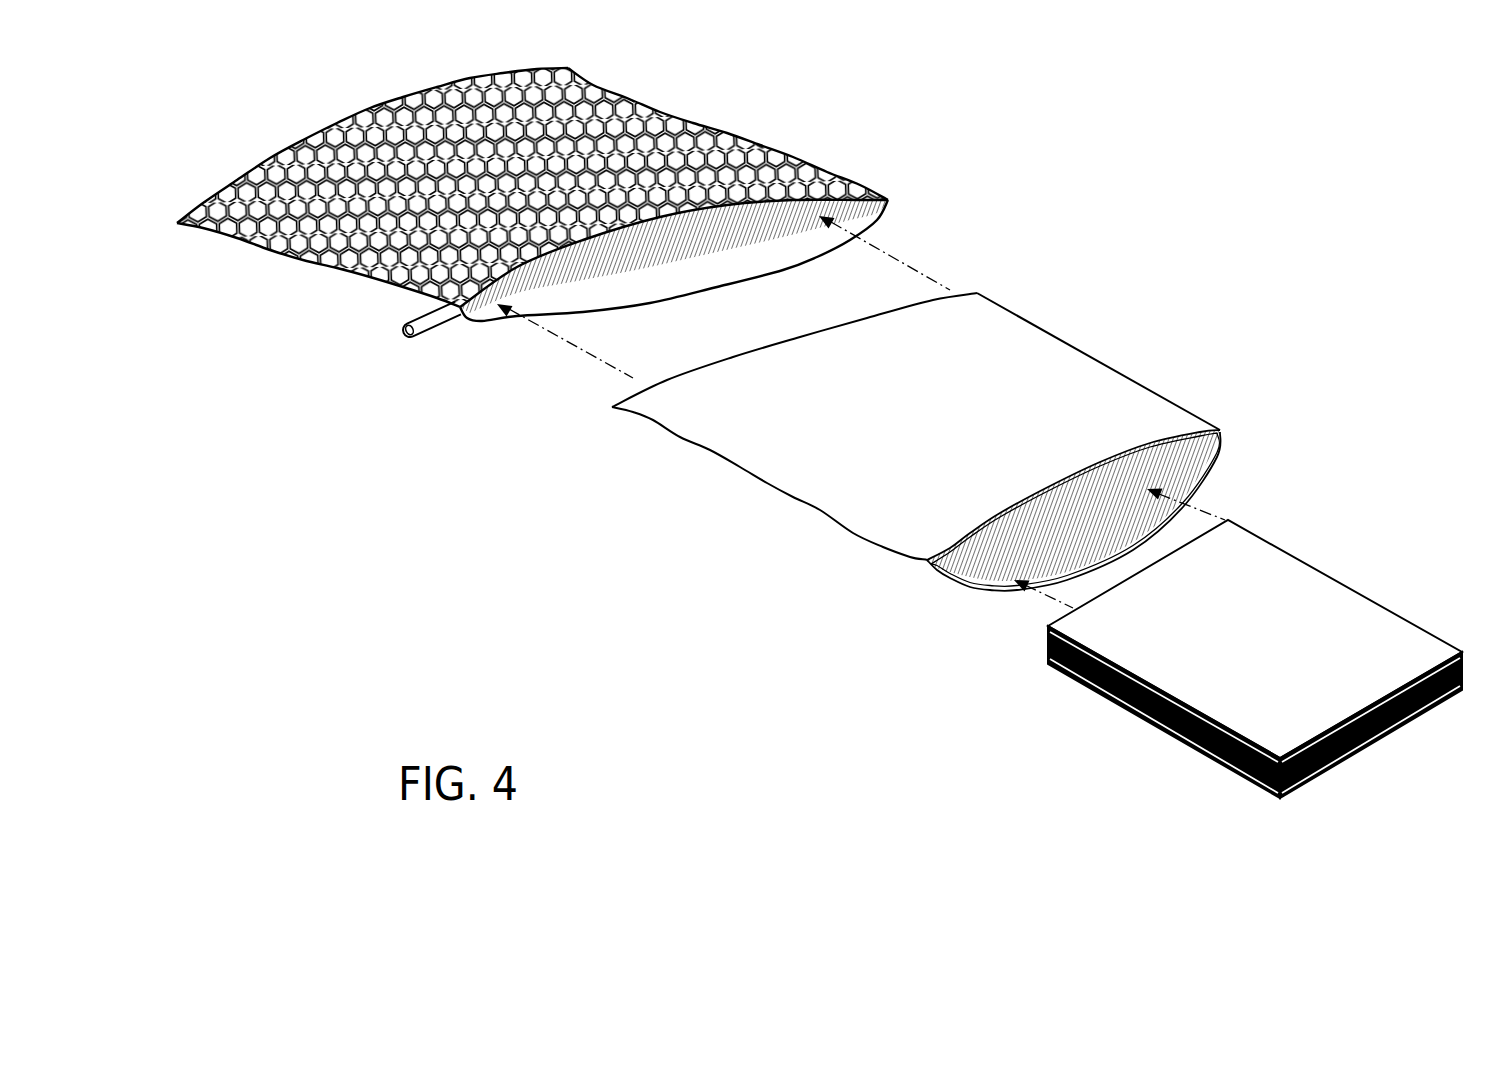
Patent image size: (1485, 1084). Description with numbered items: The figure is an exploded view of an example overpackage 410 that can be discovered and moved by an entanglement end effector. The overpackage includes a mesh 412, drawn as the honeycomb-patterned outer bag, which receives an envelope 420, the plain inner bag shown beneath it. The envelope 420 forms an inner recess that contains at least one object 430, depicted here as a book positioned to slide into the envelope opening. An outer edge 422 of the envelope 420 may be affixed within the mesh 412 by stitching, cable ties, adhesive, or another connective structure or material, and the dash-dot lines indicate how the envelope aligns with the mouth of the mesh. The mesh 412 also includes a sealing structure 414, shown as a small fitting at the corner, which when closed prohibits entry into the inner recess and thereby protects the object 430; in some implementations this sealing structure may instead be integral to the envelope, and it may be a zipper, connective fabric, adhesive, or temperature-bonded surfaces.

The outer bag with honeycomb pattern 410 is at (187, 192).
The mesh 412 is at (868, 199).
The sealing structure 414 is at (410, 337).
The envelope 420 is at (658, 453).
The outer edge 422 is at (1200, 430).
The object 430 is at (1327, 555).